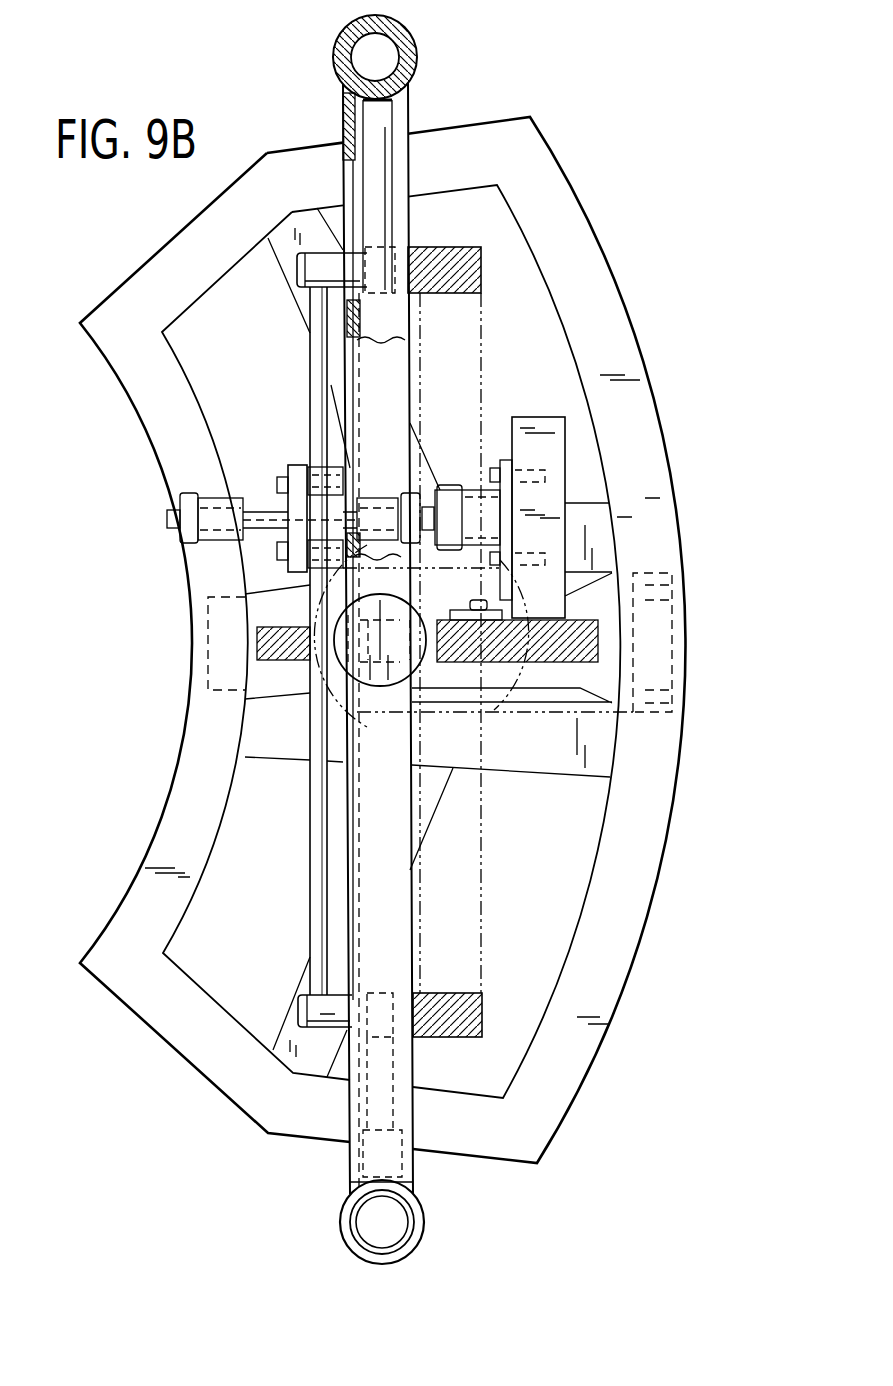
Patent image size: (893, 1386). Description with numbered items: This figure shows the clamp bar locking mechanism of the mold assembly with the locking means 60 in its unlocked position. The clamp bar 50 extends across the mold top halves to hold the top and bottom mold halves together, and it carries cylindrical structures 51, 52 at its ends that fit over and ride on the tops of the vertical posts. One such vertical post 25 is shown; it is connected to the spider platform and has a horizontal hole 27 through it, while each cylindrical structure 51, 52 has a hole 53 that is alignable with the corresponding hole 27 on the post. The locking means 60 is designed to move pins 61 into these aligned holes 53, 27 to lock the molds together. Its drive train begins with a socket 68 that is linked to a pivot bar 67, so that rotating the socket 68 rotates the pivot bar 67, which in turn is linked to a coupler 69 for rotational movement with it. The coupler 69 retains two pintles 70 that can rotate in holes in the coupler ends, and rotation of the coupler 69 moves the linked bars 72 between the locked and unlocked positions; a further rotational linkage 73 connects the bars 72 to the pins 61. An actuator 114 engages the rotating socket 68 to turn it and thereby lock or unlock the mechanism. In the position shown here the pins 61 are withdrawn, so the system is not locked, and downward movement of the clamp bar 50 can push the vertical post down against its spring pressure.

The vertical post 25 is at (410, 1218).
The horizontal hole 27 is at (388, 1181).
The clamp bar 50 is at (413, 1050).
The cylindrical structure 51 is at (407, 1250).
The cylindrical structure 52 is at (410, 44).
The hole 53 is at (377, 92).
The locking means 60 is at (258, 392).
The pin 61 is at (380, 115).
The pivot bar 67 is at (347, 513).
The socket 68 is at (453, 482).
The coupler 69 is at (297, 466).
The pintle 70 is at (282, 474).
The bar 72 is at (320, 367).
The rotational linkage 73 is at (316, 262).
The actuator 114 is at (485, 502).